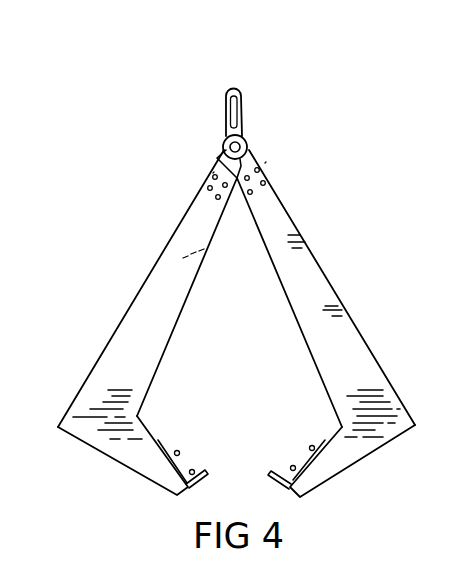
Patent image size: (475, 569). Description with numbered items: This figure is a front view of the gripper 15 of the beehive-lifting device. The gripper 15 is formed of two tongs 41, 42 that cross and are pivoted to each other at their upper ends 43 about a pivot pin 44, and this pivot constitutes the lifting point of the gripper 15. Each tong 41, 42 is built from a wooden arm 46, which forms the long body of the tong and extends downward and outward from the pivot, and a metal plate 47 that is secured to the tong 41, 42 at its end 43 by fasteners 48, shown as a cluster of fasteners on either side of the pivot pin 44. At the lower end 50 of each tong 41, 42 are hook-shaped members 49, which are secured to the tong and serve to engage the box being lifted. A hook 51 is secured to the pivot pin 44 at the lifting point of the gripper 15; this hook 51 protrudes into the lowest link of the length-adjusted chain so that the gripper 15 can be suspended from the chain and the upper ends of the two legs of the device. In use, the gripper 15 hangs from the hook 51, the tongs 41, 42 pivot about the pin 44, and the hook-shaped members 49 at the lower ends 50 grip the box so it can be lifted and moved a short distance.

The gripper 15 is at (50, 86).
The tong 41 is at (135, 264).
The tong 42 is at (347, 283).
The ends 43 is at (213, 173).
The pivot pin 44 is at (222, 138).
The wooden arm 46 is at (112, 356).
The metal plate 47 is at (217, 157).
The fasteners 48 is at (208, 188).
The hook-shaped members 49 is at (306, 460).
The lower end 50 is at (188, 487).
The hook 51 is at (239, 90).